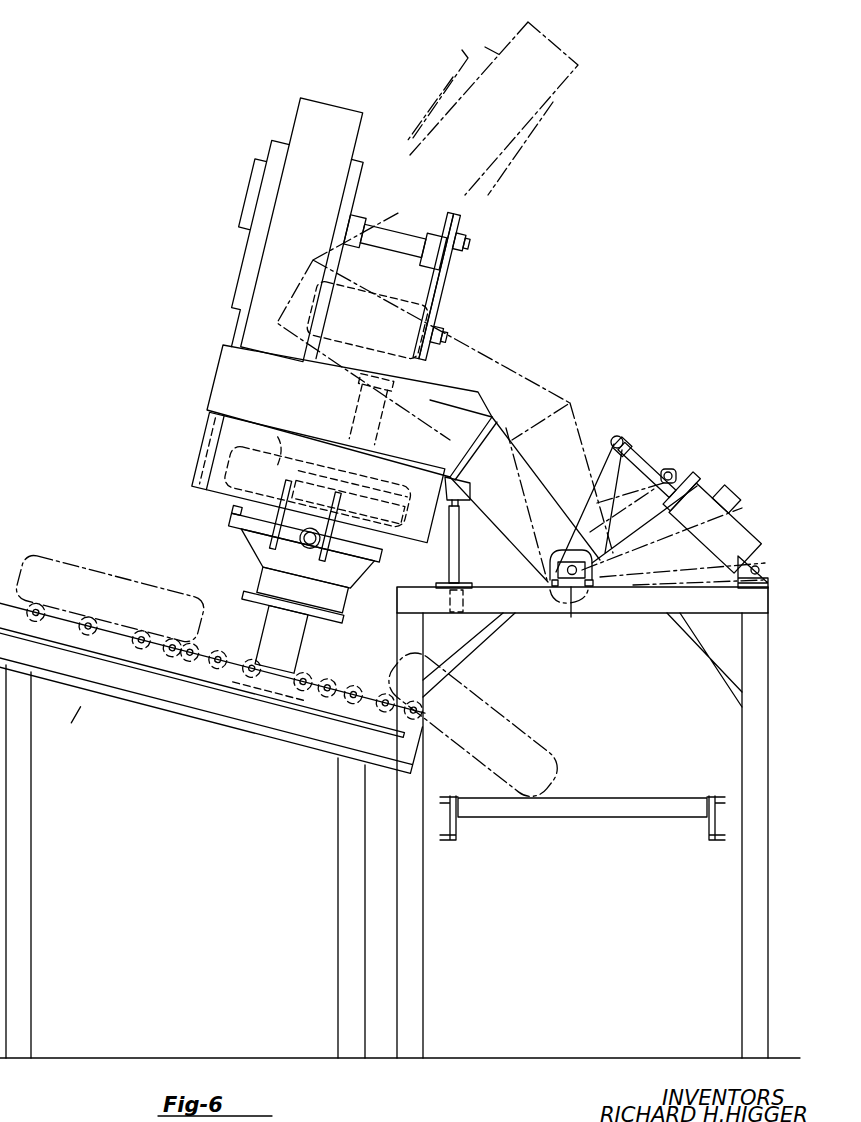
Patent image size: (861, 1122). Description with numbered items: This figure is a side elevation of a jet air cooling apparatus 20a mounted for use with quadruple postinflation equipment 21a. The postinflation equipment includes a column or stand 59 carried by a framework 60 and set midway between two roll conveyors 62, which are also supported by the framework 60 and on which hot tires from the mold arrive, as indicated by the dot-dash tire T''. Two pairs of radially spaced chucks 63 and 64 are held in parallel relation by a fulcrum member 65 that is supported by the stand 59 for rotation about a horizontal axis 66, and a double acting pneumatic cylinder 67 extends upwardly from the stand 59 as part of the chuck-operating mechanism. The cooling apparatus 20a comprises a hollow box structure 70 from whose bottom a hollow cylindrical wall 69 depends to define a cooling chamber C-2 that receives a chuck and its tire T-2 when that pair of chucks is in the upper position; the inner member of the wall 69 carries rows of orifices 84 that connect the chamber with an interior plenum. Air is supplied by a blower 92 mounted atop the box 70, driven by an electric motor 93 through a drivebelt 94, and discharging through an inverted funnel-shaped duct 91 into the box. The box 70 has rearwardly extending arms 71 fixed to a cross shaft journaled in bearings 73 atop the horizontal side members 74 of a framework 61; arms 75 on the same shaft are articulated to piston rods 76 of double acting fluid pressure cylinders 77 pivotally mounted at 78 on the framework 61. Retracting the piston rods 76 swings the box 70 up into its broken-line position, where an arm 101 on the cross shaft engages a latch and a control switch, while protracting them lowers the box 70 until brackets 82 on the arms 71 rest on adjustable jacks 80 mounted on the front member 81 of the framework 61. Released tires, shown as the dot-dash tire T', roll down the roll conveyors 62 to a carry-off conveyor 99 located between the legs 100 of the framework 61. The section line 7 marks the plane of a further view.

The section line 7- 7 is at (172, 43).
The jet air cooling apparatus 20a is at (210, 350).
The quadruple postinflation equipment 21a is at (226, 536).
The column or stand 59 is at (268, 636).
The framework 60 is at (334, 803).
The framework 61 is at (720, 705).
The roll conveyors 62 is at (154, 672).
The chucks 63 is at (292, 430).
The chucks 64 is at (254, 594).
The fulcrum member 65 is at (318, 560).
The horizontal axis 66 is at (306, 540).
The double acting pneumatic cylinder 67 is at (386, 412).
The hollow cylindrical wall 69 is at (218, 434).
The hollow box structure 70 is at (230, 380).
The rearwardly extending arms 71 is at (504, 518).
The bearings 73 is at (572, 592).
The horizontal side members 74 is at (613, 610).
The arms 75 is at (609, 456).
The piston rods 76 is at (645, 462).
The double acting fluid pressure cylinders 77 is at (734, 542).
The pivotal mounting 78 is at (762, 570).
The adjustable jacks or abutments 80 is at (460, 574).
The front member 81 is at (465, 602).
The brackets 82 is at (463, 487).
The rows of orifices 84 is at (450, 436).
The inverted funnel-shaped duct 91 is at (254, 312).
The blower 92 is at (298, 116).
The electric motor 93 is at (390, 294).
The drivebelt 94 is at (440, 304).
The carry-off conveyor 99 is at (650, 796).
The legs 100 is at (766, 722).
The arm 101 is at (652, 536).
The cylindrical cooling chamber C-2 is at (218, 496).
The tube in clamp T-2 is at (349, 472).
The tire T' is at (479, 413).
The tire T'' is at (110, 588).